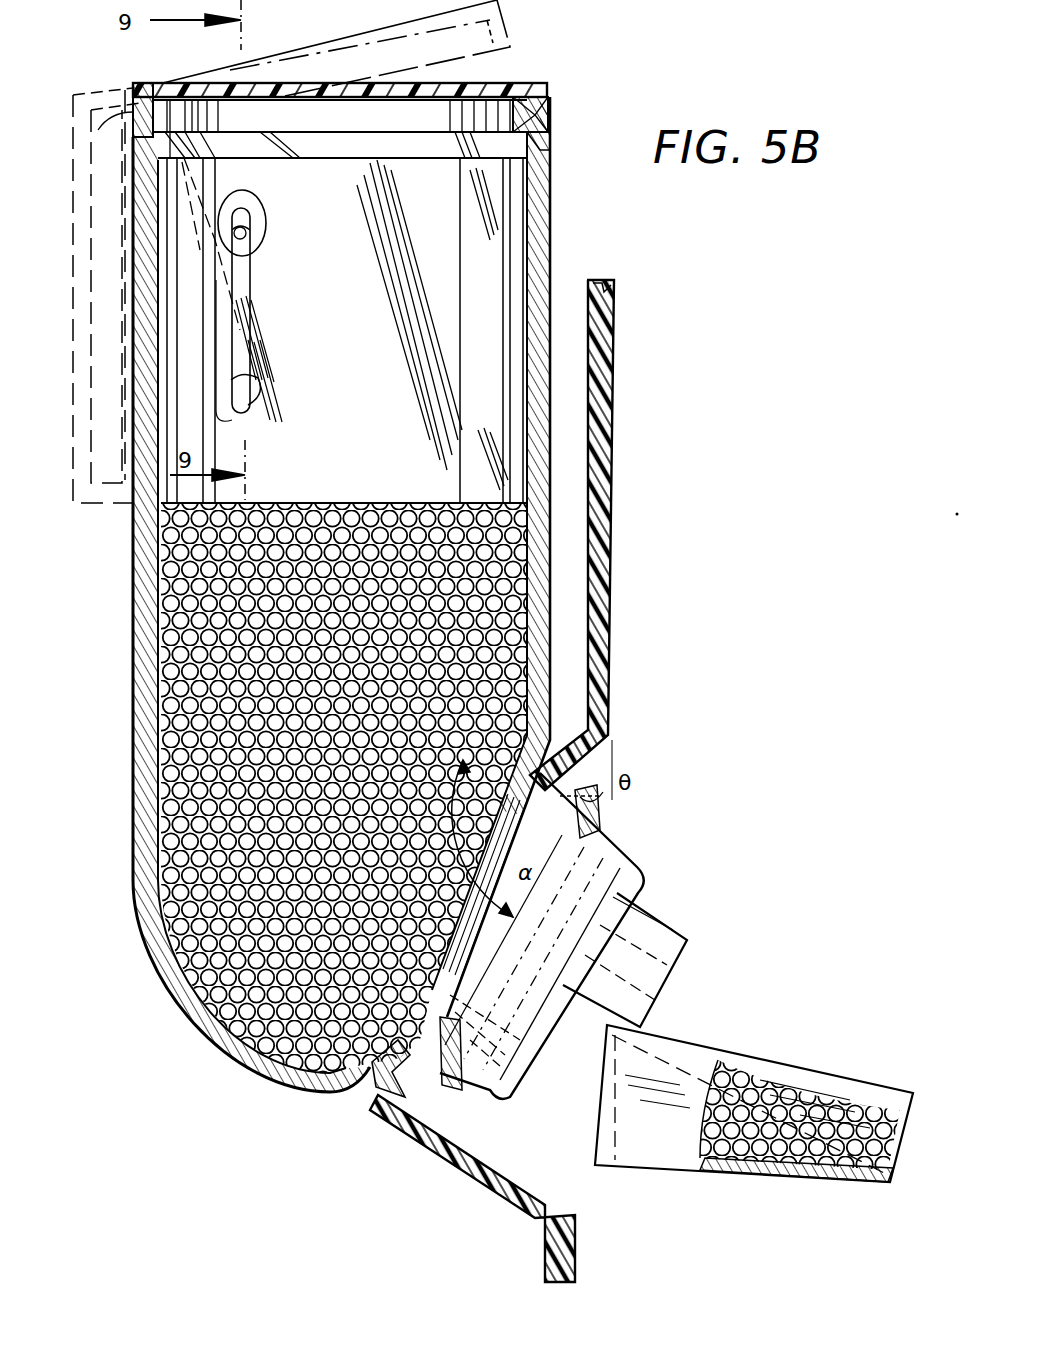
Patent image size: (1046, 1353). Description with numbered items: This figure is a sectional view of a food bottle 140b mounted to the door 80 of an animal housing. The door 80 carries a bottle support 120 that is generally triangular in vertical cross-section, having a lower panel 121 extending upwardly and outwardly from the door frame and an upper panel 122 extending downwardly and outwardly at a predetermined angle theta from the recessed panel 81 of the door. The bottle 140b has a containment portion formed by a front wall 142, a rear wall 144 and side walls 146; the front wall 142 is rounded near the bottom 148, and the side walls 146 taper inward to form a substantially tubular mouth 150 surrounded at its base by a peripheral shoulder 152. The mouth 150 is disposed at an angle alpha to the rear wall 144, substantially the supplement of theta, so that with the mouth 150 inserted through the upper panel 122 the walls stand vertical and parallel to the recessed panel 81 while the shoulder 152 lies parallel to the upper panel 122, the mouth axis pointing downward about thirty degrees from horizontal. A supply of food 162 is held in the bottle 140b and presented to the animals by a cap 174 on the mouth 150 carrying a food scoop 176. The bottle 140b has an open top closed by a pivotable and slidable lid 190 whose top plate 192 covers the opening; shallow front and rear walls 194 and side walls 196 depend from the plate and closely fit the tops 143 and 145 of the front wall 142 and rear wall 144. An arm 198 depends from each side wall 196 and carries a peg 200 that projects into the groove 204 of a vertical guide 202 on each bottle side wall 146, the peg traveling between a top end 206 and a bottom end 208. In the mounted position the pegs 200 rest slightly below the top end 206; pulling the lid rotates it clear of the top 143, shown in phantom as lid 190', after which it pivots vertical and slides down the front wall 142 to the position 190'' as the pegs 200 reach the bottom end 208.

The door 80 is at (622, 360).
The recessed panel 81 is at (605, 495).
The bottle support 120 is at (385, 1150).
The lower panel 121 is at (460, 1165).
The upper panel 122 is at (600, 722).
The food bottle 140b is at (135, 588).
The front wall 142 is at (135, 698).
The top of front wall 143 is at (165, 84).
The rear wall 144 is at (540, 240).
The top of rear wall 145 is at (540, 97).
The side walls 146 is at (382, 481).
The bottom 148 is at (228, 1040).
The mouth 150 is at (590, 845).
The peripheral shoulder 152 is at (545, 760).
The food 162 is at (165, 838).
The cap 174 is at (640, 910).
The food scoop 176 is at (672, 1172).
The lid 190 is at (576, 114).
The lid in open position 190' is at (364, 48).
The lid in slid-down position 190'' is at (90, 295).
The top plate 192 is at (500, 87).
The front and rear walls 194 is at (98, 130).
The side walls 196 is at (540, 132).
The arm 198 is at (258, 192).
The peg 200 is at (248, 236).
The vertical guide 202 is at (262, 290).
The vertical groove 204 is at (262, 310).
The top end 206 is at (246, 233).
The bottom end 208 is at (252, 388).